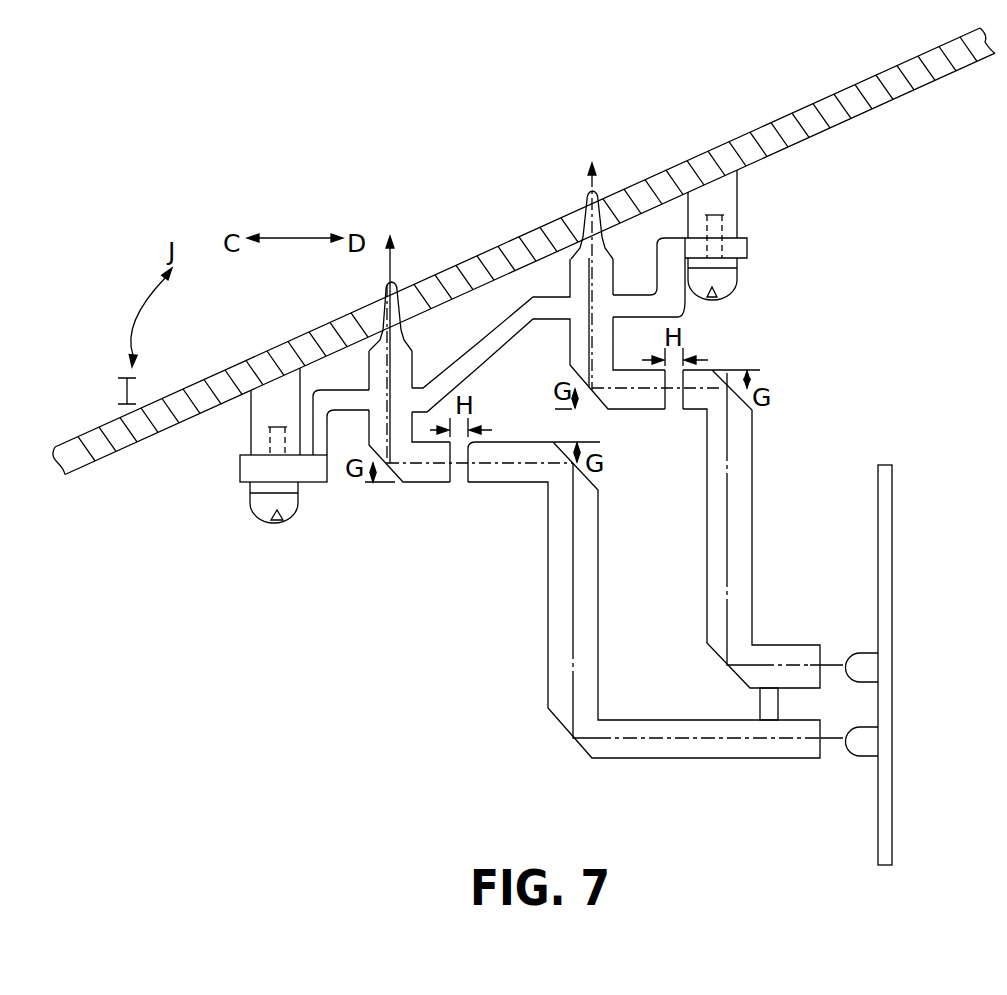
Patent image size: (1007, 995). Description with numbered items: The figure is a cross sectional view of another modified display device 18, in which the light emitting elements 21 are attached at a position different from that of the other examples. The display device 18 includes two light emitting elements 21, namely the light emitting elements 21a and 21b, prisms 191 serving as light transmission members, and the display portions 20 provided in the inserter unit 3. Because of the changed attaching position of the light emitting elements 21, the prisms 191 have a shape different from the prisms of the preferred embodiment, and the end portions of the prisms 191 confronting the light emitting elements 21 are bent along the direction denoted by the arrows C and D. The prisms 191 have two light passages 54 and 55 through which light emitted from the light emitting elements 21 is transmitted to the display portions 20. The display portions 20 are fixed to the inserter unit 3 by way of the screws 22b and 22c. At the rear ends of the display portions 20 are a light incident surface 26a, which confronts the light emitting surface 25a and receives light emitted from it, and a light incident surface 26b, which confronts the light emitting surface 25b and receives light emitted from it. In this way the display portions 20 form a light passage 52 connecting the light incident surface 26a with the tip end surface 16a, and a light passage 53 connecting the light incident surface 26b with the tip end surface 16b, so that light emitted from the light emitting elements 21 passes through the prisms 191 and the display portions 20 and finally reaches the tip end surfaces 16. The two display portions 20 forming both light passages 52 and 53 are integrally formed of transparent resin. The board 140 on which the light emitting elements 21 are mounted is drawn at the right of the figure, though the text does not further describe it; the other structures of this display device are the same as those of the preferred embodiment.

The inserter unit 3 is at (685, 160).
The tip end surfaces 16 is at (503, 190).
The tip end surface 16a is at (400, 284).
The tip end surface 16b is at (590, 206).
The display device 18 is at (274, 607).
The display portions 20 is at (365, 357).
The light emitting elements 21 is at (950, 723).
The light emitting element 21a is at (870, 726).
The light emitting element 21b is at (870, 683).
The screw 22b is at (260, 522).
The screw 22c is at (740, 280).
The light emitting surface 25a is at (468, 482).
The light emitting surface 25b is at (683, 409).
The light incident surface 26a is at (450, 482).
The light incident surface 26b is at (665, 409).
The light passage 52 is at (398, 368).
The light passage 53 is at (575, 335).
The light passage 54 is at (583, 612).
The light passage 55 is at (736, 540).
The circuit board 140 is at (892, 518).
The prisms 191 is at (538, 667).